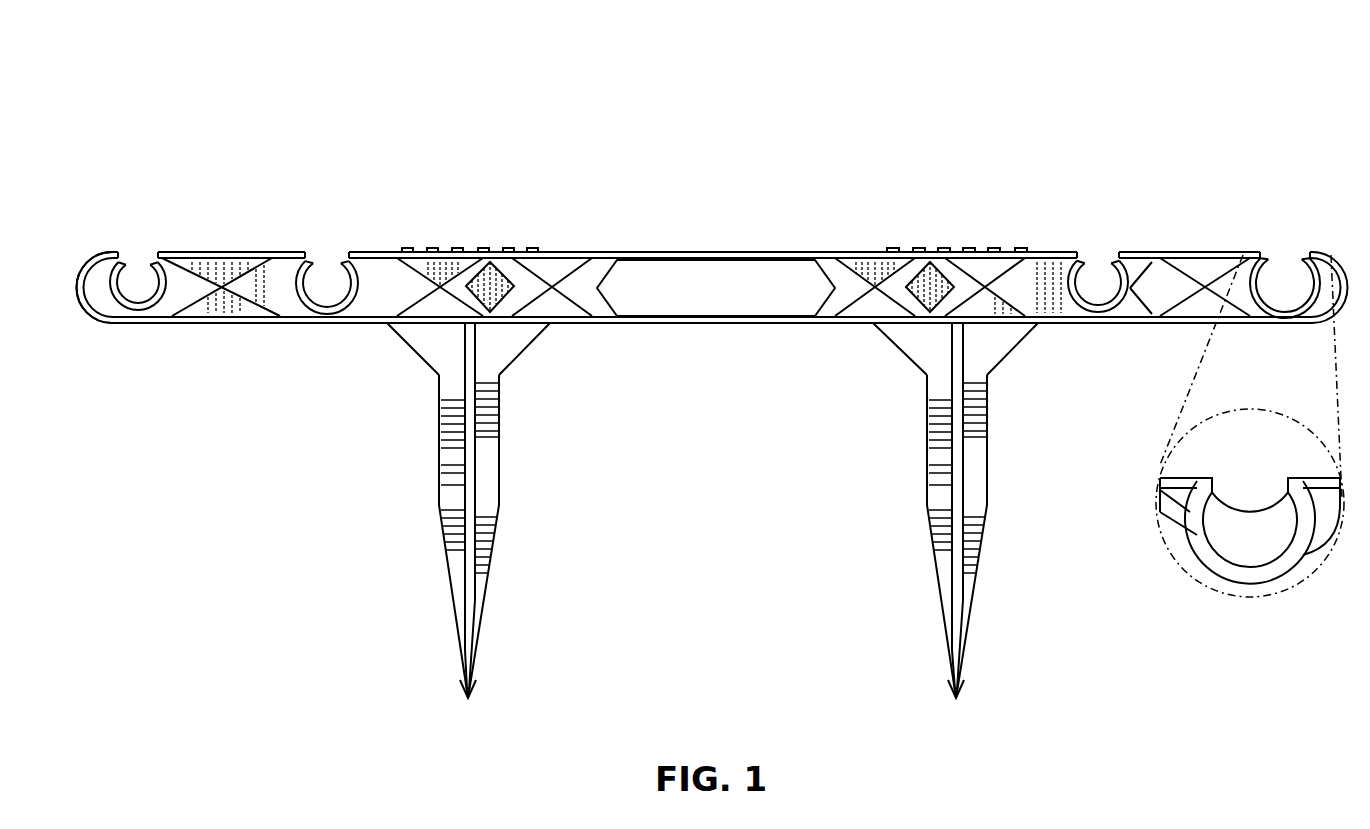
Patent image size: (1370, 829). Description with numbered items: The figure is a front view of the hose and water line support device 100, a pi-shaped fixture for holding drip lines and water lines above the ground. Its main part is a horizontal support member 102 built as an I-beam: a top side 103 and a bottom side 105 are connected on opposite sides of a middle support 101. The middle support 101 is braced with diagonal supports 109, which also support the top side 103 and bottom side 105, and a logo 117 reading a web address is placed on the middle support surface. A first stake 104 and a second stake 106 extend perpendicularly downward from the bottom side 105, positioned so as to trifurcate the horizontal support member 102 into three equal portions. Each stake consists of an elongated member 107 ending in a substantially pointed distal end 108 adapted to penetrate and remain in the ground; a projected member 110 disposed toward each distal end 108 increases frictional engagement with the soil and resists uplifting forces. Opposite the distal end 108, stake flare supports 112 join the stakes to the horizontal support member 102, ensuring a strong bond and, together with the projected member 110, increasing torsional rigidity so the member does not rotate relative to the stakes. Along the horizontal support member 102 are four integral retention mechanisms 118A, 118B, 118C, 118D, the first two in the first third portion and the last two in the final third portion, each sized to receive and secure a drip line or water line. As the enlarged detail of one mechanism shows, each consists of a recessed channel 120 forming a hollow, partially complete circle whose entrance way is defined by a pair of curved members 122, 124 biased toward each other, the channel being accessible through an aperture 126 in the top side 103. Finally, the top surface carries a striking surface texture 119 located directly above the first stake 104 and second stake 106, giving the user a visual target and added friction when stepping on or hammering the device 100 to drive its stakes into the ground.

The hose and water line support device 100 is at (1058, 110).
The middle support 101 is at (757, 268).
The horizontal support member 102 is at (690, 324).
The top side 103 is at (225, 256).
The first stake 104 is at (440, 450).
The bottom side 105 is at (178, 325).
The second stake 106 is at (988, 500).
The elongated member 107 is at (498, 440).
The distal end 108 is at (470, 700).
The diagonal supports 109 is at (520, 257).
The projected member 110 is at (445, 492).
The stake flare supports 112 is at (412, 348).
The logo 117 is at (672, 275).
The integral retention mechanism 118A is at (145, 257).
The integral retention mechanism 118B is at (335, 258).
The integral retention mechanism 118C is at (1110, 257).
The integral retention mechanism 118D is at (1288, 258).
The striking surface texture 119 is at (440, 249).
The recessed channel 120 is at (1253, 528).
The curved member 122 is at (1208, 548).
The curved member 124 is at (1300, 548).
The aperture 126 is at (1232, 487).